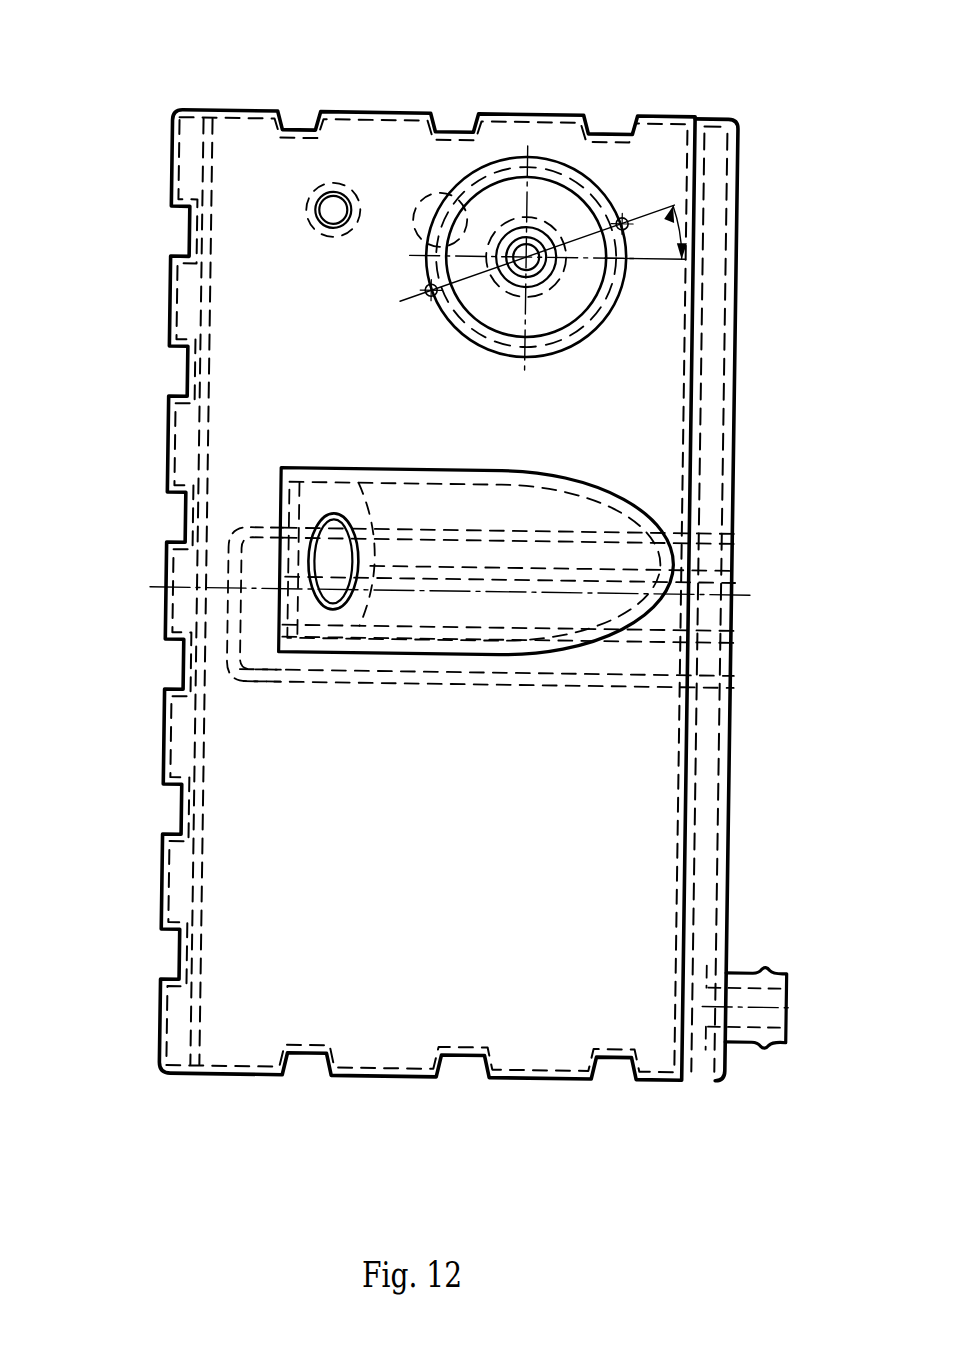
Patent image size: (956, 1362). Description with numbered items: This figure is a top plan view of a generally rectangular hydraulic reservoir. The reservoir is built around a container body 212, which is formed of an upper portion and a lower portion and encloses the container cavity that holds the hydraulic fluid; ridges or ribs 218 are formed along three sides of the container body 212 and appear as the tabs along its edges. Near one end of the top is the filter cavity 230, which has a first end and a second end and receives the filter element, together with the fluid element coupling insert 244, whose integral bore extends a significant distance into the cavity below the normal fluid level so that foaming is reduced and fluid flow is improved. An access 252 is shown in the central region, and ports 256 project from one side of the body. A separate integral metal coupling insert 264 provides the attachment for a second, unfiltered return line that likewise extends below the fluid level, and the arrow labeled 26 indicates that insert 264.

The container body 212 is at (472, 910).
The ridges or ribs 218 is at (182, 382).
The arrow indicating hole 26 is at (343, 189).
The fluid element coupling insert 244 is at (538, 242).
The filter cavity 230 is at (616, 215).
The access 252 is at (322, 553).
The ports 256 is at (758, 968).
The integral metal coupling insert 264 is at (318, 199).